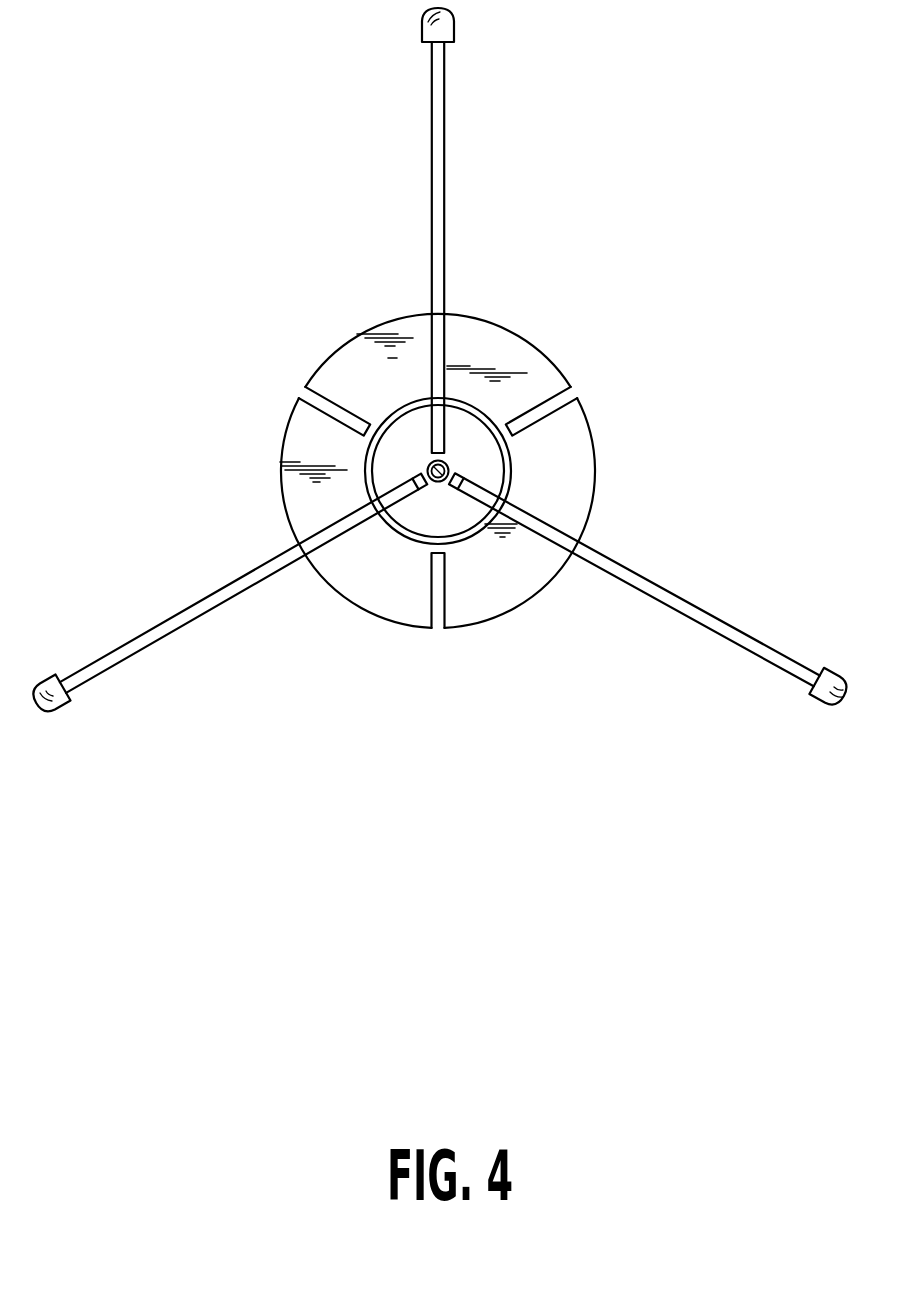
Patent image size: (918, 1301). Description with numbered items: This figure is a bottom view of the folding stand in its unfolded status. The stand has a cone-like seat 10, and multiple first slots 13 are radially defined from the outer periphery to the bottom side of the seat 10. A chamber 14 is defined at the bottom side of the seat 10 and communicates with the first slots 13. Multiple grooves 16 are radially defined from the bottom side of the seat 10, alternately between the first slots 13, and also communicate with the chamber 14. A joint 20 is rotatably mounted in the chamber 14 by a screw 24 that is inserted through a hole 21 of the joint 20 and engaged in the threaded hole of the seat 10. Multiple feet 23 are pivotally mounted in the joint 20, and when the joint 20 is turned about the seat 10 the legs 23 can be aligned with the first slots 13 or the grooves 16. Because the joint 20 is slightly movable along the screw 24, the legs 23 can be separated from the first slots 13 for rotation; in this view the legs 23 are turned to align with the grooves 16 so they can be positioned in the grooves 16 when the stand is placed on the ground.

The seat 10 is at (508, 352).
The first slots 13 is at (562, 395).
The chamber 14 is at (513, 455).
The grooves 16 is at (540, 537).
The joint 20 is at (490, 467).
The hole 21 is at (433, 482).
The feet 23 is at (443, 237).
The screw 24 is at (446, 482).